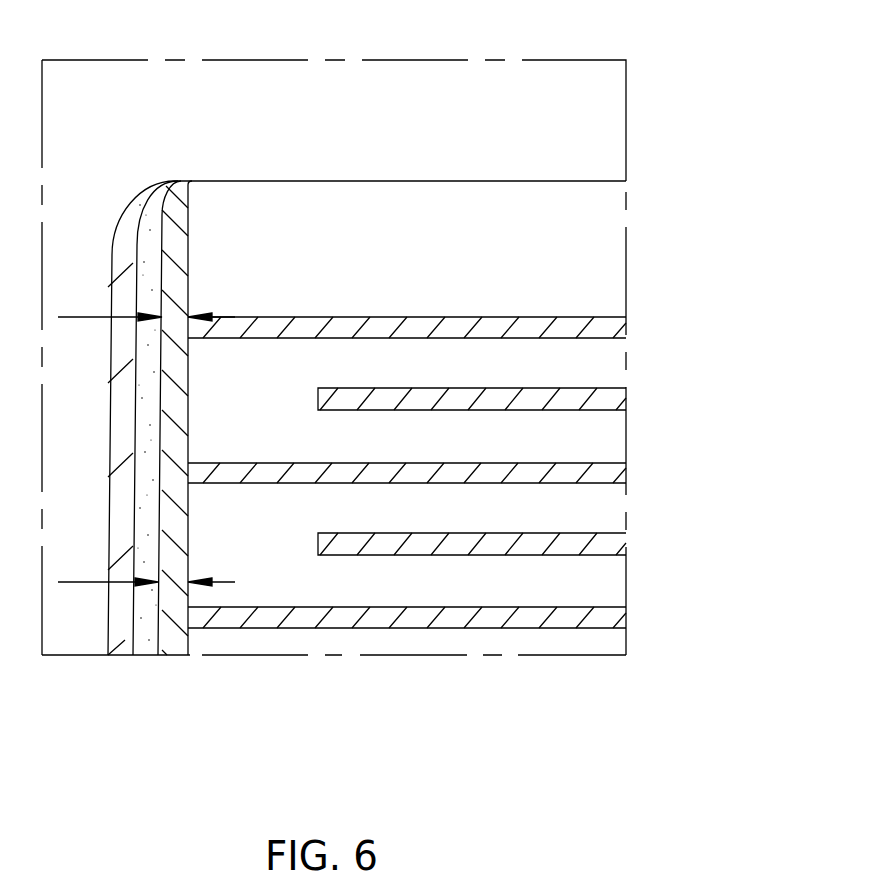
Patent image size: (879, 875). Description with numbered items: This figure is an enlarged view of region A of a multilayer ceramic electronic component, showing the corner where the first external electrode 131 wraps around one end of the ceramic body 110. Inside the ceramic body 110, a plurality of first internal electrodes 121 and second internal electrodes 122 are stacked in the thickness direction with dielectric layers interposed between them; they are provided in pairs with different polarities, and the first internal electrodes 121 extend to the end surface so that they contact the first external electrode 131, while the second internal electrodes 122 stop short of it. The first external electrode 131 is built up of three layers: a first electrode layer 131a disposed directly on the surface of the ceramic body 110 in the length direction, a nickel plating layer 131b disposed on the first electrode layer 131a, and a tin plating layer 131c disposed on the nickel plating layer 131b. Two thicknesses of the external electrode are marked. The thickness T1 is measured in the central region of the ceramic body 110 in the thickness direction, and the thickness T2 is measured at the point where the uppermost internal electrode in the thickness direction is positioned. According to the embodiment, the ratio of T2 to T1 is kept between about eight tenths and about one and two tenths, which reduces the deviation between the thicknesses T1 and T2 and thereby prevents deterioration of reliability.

The ceramic body 110 is at (514, 181).
The first internal electrodes 121 is at (612, 326).
The second internal electrodes 122 is at (612, 398).
The first external electrode 131 is at (148, 479).
The first electrode layer 131a is at (198, 456).
The nickel plating layer 131b is at (147, 640).
The tin plating layer 131c is at (130, 642).
The thickness of the external electrode in the central region T1 is at (145, 570).
The thickness of the external electrode at the uppermost internal electrode T2 is at (145, 305).
The region A is at (348, 799).